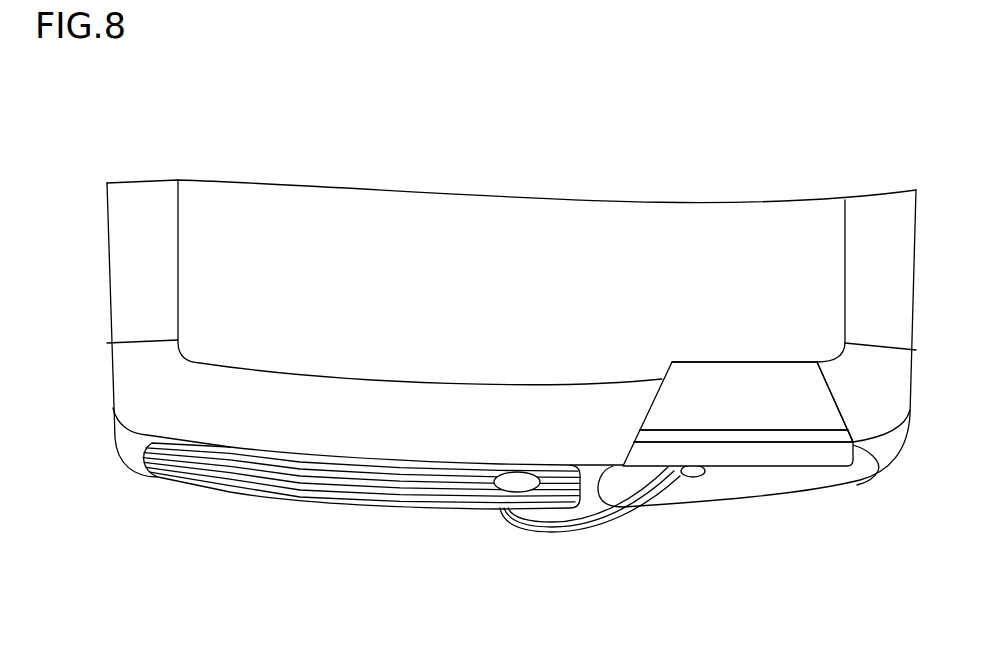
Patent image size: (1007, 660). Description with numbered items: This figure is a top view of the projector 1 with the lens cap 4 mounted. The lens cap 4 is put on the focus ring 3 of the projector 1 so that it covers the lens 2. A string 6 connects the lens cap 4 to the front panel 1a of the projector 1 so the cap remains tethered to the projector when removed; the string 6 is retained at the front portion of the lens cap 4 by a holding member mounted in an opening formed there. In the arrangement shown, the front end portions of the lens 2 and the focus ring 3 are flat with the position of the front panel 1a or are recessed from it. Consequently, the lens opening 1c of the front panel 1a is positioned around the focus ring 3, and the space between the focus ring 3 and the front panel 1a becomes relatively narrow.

The projector 1 is at (478, 225).
The front panel 1a is at (407, 507).
The lens opening 1c is at (713, 488).
The lens 2 is at (762, 402).
The focus ring 3 is at (802, 413).
The lens cap 4 is at (770, 457).
The string 6 is at (612, 525).